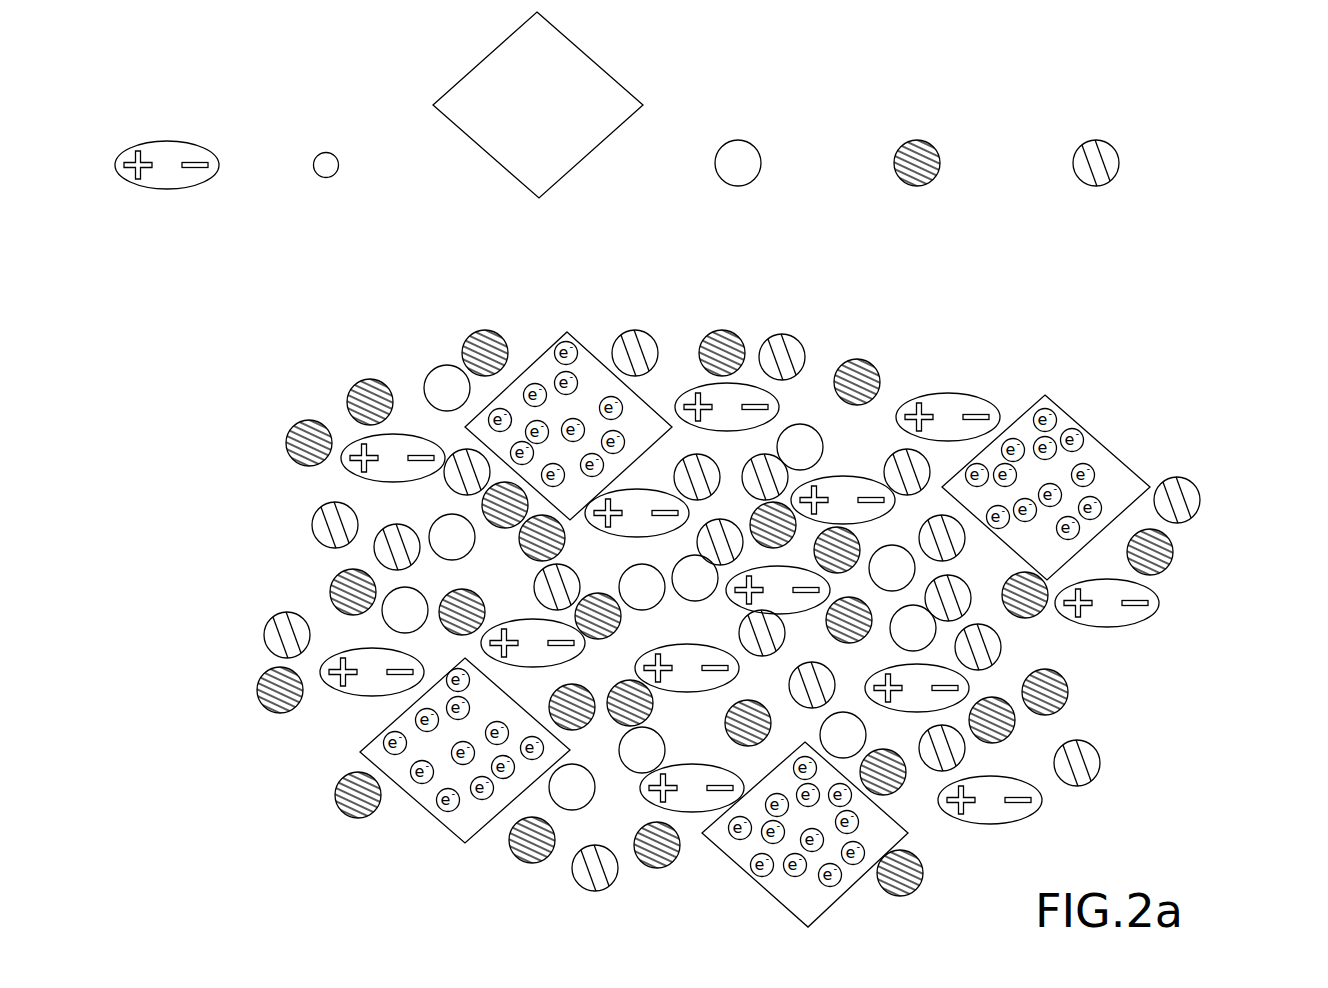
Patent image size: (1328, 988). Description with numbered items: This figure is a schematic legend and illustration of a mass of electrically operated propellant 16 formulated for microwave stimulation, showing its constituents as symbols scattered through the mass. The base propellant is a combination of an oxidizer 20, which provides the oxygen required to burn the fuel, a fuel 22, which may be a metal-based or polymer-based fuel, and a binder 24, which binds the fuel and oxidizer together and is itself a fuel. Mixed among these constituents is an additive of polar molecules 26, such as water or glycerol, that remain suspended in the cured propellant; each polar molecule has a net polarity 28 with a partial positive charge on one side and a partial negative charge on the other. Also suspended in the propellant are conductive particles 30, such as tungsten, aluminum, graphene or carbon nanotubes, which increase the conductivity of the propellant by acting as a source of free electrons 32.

The electrically operated propellant 16 is at (1200, 352).
The oxidizer 20 is at (1107, 263).
The fuel 22 is at (926, 263).
The binder 24 is at (746, 263).
The polar molecules 26 is at (161, 183).
The net polarity 28 is at (163, 142).
The conductive particles 30 is at (549, 292).
The free electrons 32 is at (339, 292).